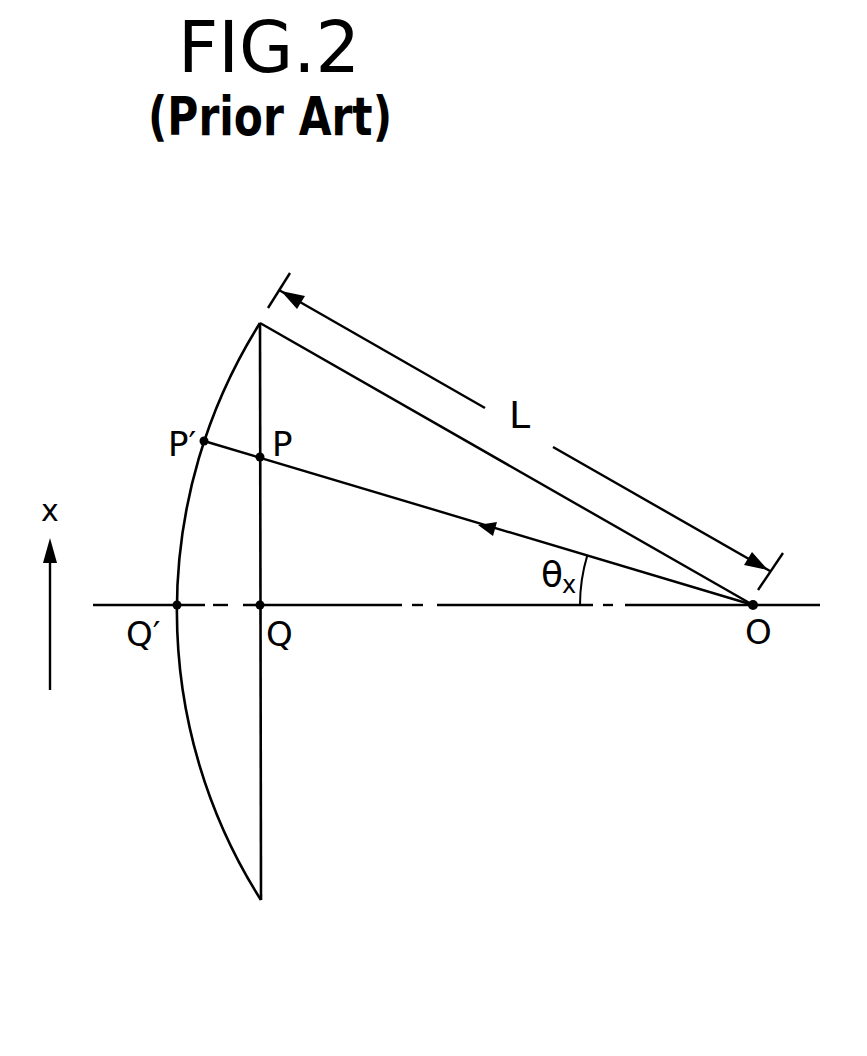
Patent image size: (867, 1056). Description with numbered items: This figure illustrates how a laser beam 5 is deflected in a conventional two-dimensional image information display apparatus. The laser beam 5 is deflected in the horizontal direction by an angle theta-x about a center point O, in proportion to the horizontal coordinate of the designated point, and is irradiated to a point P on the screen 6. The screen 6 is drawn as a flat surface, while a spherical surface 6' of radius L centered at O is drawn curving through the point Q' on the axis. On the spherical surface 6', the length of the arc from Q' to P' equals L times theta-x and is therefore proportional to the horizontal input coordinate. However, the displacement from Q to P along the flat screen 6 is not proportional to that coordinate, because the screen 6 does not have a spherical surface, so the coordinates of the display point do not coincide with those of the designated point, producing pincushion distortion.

The laser beam 5 is at (388, 497).
The screen 6 is at (297, 611).
The spherical surface 6' is at (199, 611).